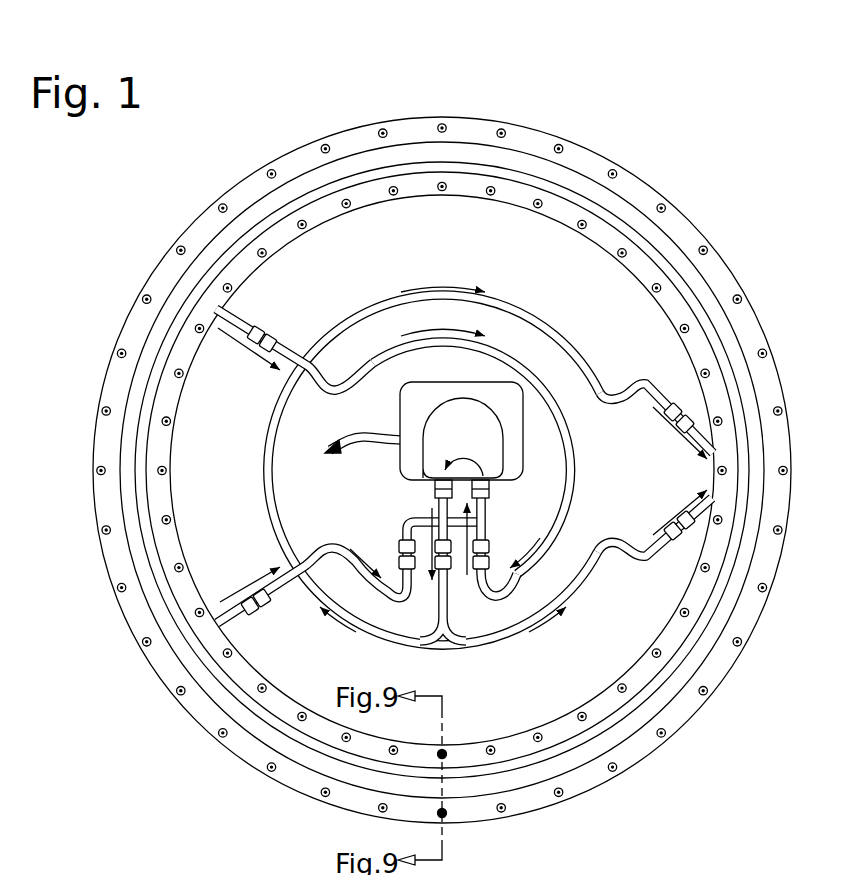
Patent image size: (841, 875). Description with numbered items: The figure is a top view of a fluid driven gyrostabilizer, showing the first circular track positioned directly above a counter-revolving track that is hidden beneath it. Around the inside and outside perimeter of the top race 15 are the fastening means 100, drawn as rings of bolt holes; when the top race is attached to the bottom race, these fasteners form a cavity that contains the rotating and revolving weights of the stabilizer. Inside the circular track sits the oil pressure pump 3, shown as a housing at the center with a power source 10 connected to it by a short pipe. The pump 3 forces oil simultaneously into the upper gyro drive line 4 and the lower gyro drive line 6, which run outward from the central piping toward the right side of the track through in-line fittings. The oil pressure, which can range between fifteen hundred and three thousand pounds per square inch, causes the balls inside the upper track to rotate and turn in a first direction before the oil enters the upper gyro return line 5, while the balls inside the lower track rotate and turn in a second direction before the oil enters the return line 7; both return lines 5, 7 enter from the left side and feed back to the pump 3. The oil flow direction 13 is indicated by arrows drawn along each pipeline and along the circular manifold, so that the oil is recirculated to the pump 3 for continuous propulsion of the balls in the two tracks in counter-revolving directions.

The fastening means 100 is at (538, 203).
The top race 15 is at (612, 160).
The oil flow direction 13 is at (441, 285).
The oil pressure pump 3 is at (470, 423).
The upper gyro return line 5 is at (290, 354).
The lower gyro drive line 6 is at (650, 383).
The return line 7 is at (245, 627).
The upper gyro drive line 4 is at (657, 558).
The power source 10 is at (334, 450).